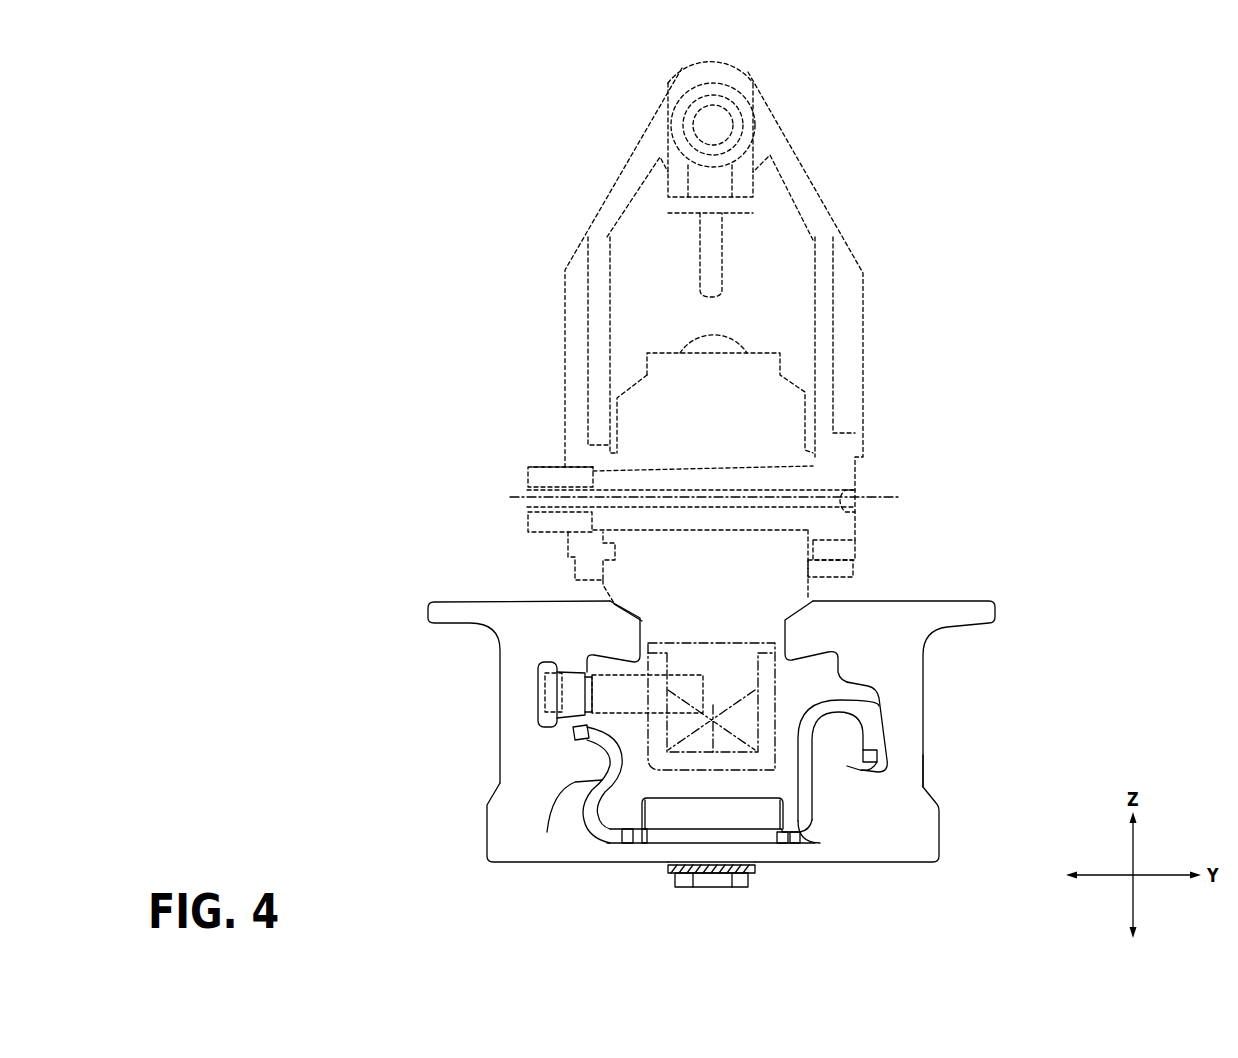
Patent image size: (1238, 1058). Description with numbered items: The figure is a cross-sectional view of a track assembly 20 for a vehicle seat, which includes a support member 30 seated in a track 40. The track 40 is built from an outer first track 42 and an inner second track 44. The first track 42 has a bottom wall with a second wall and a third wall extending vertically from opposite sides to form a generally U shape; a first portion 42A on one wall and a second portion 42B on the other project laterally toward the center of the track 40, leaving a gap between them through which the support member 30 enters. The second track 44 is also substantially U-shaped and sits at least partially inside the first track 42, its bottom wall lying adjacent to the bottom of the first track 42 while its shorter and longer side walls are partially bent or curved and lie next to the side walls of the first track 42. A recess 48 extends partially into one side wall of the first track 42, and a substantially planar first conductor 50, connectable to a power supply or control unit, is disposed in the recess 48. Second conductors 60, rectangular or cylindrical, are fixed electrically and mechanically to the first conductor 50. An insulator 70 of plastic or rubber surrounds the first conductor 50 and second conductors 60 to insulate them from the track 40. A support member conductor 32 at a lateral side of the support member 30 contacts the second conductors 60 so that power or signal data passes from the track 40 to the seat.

The track assembly 20 is at (960, 132).
The support member 30 is at (912, 394).
The support member conductor 32 is at (637, 697).
The track 40 is at (689, 736).
The first track 42 is at (689, 734).
The first portion 42A is at (587, 625).
The second portion 42B is at (817, 621).
The second track 44 is at (717, 833).
The recess 48 is at (537, 677).
The first conductor 50 is at (540, 693).
The second conductors 60 is at (590, 692).
The insulator 70 is at (567, 716).